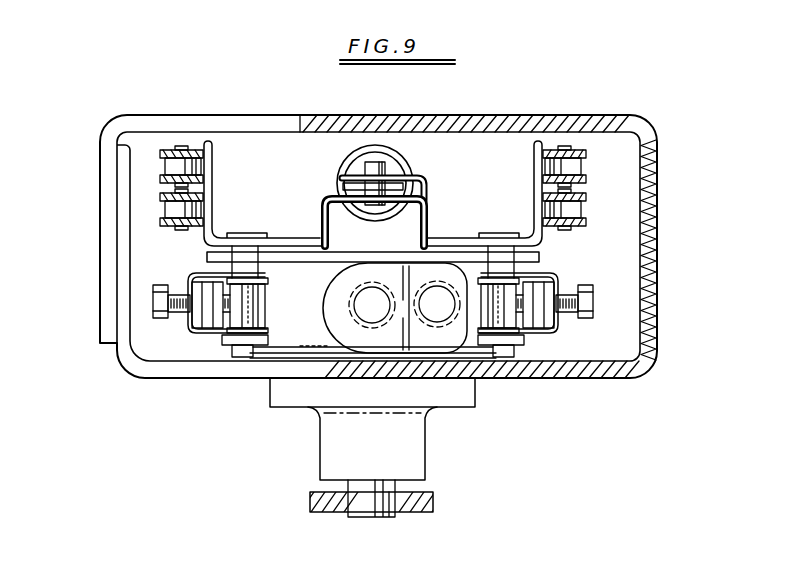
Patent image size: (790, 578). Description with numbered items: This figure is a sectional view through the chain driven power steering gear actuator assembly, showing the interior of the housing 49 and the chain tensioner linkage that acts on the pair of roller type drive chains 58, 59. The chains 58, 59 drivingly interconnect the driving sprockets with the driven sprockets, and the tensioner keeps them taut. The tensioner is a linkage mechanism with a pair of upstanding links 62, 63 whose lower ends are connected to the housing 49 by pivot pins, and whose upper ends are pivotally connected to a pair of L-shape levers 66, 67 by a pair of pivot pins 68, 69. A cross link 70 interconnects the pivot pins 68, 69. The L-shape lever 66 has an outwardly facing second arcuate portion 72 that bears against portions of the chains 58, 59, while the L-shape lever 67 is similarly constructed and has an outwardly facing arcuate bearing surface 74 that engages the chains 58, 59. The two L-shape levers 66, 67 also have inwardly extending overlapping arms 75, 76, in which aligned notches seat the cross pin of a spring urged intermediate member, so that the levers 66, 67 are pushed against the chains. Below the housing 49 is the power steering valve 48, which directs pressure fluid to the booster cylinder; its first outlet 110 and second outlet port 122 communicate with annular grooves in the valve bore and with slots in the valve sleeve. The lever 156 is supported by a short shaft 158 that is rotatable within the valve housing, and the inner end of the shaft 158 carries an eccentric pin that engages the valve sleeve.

The housing 49 is at (547, 124).
The roller type drive chain 59 is at (160, 167).
The roller type drive chain 58 is at (162, 215).
The second arcuate portion 72 is at (207, 185).
The outwardly facing arcuate bearing surface 74 is at (542, 187).
The inwardly extending overlapping arm 75 is at (322, 200).
The inwardly extending overlapping arm 76 is at (428, 174).
The L-shape lever 66 is at (312, 236).
The L-shape lever 67 is at (435, 235).
The cross link 70 is at (206, 257).
The upstanding link 62 is at (190, 336).
The upstanding link 63 is at (557, 333).
The pivot pin 68 is at (247, 352).
The pivot pin 69 is at (498, 352).
The second outlet port 122 is at (363, 303).
The first outlet 110 is at (430, 313).
The power steering valve 48 is at (300, 412).
The lever 156 is at (435, 503).
The short shaft 158 is at (365, 512).